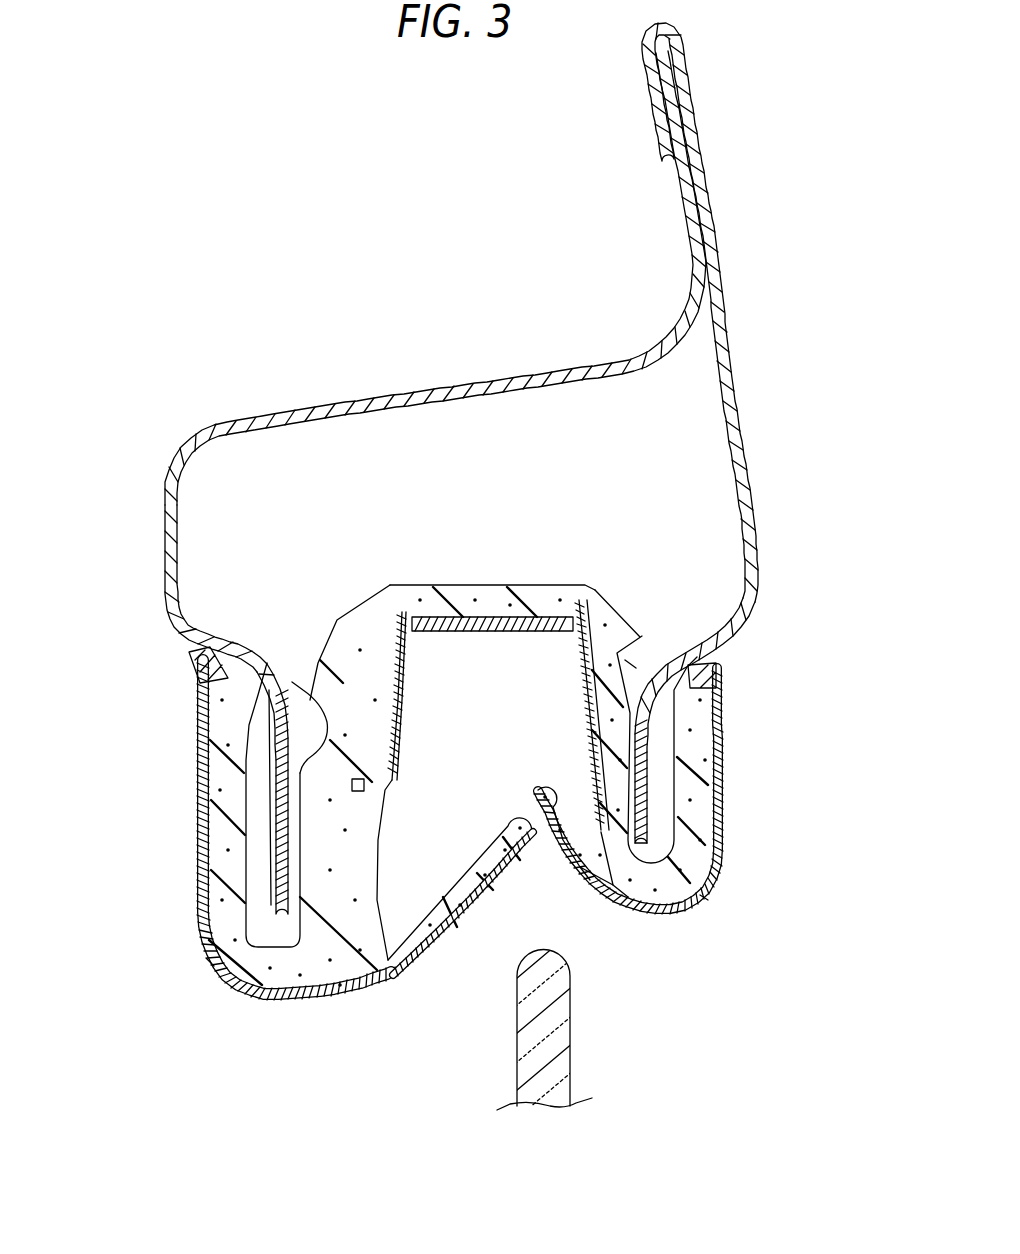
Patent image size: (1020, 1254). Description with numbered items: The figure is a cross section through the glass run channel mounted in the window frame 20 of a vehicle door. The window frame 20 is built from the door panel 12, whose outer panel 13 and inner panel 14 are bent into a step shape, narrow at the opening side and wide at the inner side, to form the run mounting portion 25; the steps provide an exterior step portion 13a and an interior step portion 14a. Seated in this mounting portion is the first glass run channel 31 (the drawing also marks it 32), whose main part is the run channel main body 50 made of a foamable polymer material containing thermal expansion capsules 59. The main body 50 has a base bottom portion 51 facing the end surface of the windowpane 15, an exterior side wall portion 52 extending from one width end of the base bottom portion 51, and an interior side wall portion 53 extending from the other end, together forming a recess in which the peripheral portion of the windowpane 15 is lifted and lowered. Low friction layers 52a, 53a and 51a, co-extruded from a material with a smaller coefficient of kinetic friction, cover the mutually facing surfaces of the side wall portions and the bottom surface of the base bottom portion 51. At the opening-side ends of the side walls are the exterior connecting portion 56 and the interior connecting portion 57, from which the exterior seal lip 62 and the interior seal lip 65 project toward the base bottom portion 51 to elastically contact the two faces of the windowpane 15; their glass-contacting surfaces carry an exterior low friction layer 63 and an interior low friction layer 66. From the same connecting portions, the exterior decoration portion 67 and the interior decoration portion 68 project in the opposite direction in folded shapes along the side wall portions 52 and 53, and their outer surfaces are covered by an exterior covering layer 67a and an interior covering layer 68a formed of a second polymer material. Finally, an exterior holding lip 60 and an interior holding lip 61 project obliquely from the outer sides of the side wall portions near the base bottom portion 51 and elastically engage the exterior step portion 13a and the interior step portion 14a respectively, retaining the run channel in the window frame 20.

The door panel 12 is at (465, 468).
The outer panel 13 is at (750, 492).
The exterior step portion 13a is at (678, 647).
The inner panel 14 is at (162, 559).
The interior step portion 14a is at (292, 706).
The windowpane 15 is at (573, 1052).
The window frame 20 is at (653, 773).
The run mounting portion 25 is at (330, 479).
The first glass run channel 31 is at (456, 869).
The cover layer 32 is at (253, 998).
The run channel main body 50 is at (451, 804).
The base bottom portion 51 is at (482, 600).
The low friction layer 51a is at (461, 632).
The exterior side wall portion 52 is at (607, 725).
The low friction layer 52a is at (577, 700).
The interior side wall portion 53 is at (387, 773).
The low friction layer 53a is at (407, 713).
The exterior connecting portion 56 is at (643, 890).
The interior connecting portion 57 is at (325, 967).
The thermal expansion capsules 59 is at (380, 792).
The exterior holding lip 60 is at (640, 660).
The interior holding lip 61 is at (335, 660).
The exterior seal lip 62 is at (573, 823).
The exterior low friction layer 63 is at (587, 903).
The interior seal lip 65 is at (457, 907).
The interior low friction layer 66 is at (457, 927).
The exterior decoration portion 67 is at (700, 813).
The exterior covering layer 67a is at (707, 873).
The interior decoration portion 68 is at (220, 738).
The interior covering layer 68a is at (215, 957).